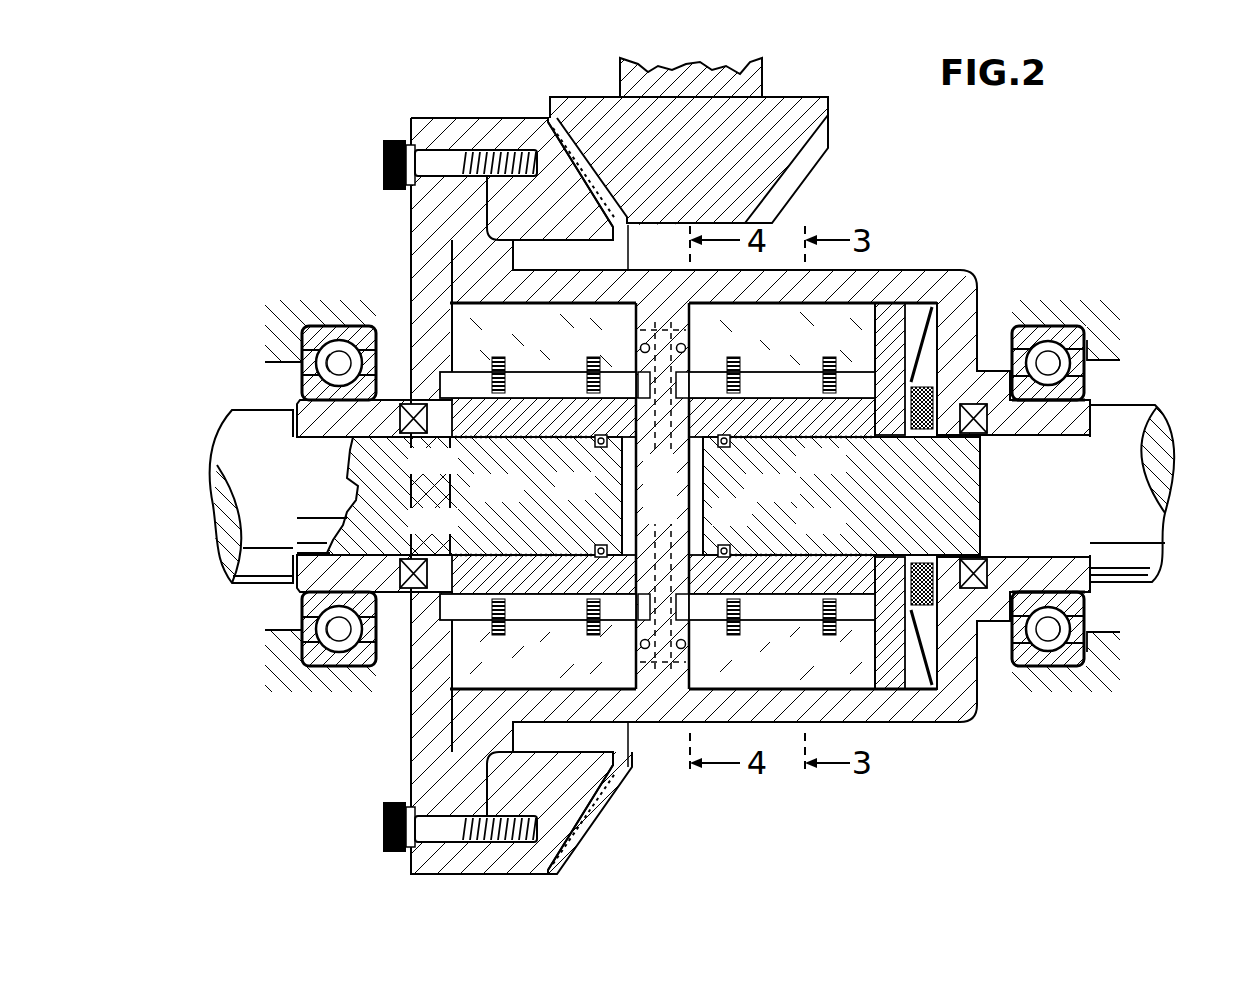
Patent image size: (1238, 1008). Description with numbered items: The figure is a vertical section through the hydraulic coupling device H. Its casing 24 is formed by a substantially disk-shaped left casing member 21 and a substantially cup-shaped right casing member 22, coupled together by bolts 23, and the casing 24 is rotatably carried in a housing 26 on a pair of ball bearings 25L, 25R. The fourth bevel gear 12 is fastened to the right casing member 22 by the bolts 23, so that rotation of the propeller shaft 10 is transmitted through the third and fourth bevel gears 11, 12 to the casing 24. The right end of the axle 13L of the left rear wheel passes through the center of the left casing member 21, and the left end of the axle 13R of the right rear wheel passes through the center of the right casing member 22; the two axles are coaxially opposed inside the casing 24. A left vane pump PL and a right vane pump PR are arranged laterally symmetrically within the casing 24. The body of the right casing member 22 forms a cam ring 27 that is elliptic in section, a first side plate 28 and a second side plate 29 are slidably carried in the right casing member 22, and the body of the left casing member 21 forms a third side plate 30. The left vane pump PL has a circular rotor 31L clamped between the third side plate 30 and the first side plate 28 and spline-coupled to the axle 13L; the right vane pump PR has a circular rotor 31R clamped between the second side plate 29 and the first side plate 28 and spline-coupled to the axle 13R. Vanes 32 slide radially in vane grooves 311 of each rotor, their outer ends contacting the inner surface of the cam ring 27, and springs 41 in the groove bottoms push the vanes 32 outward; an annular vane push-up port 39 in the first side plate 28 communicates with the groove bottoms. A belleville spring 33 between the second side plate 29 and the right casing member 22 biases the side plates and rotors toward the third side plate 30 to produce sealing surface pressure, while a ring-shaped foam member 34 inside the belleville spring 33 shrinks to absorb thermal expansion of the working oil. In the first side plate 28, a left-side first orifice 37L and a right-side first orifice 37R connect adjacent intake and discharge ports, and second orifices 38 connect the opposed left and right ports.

The propeller shaft 10 is at (748, 88).
The third bevel gear 11 is at (806, 146).
The fourth bevel gear 12 is at (585, 811).
The axle of the left rear wheel 13L is at (242, 427).
The axle of the right rear wheel 13R is at (1125, 405).
The left casing member 21 is at (461, 496).
The right casing member 22 is at (663, 732).
The bolts 23 is at (383, 160).
The casing 24 is at (851, 496).
The left ball bearing 25L is at (342, 352).
The right ball bearing 25R is at (1052, 352).
The housing 26 is at (288, 642).
The cam ring 27 is at (851, 685).
The first side plate 28 is at (672, 494).
The second side plate 29 is at (892, 312).
The third side plate 30 is at (416, 245).
The rotor of the left vane pump 31L is at (513, 418).
The rotor of the right vane pump 31R is at (794, 416).
The vane grooves 311 is at (472, 386).
The vanes 32 is at (556, 348).
The belleville spring 33 is at (932, 688).
The ring-shaped foam member 34 is at (924, 382).
The left-side first orifice 37L is at (640, 348).
The right-side first orifice 37R is at (686, 348).
The second orifice 38 is at (663, 496).
The vane push-up port 39 is at (602, 448).
The springs 41 is at (591, 383).
The hydraulic coupling device H is at (688, 495).
The left vane pump PL is at (440, 658).
The right vane pump PR is at (884, 655).